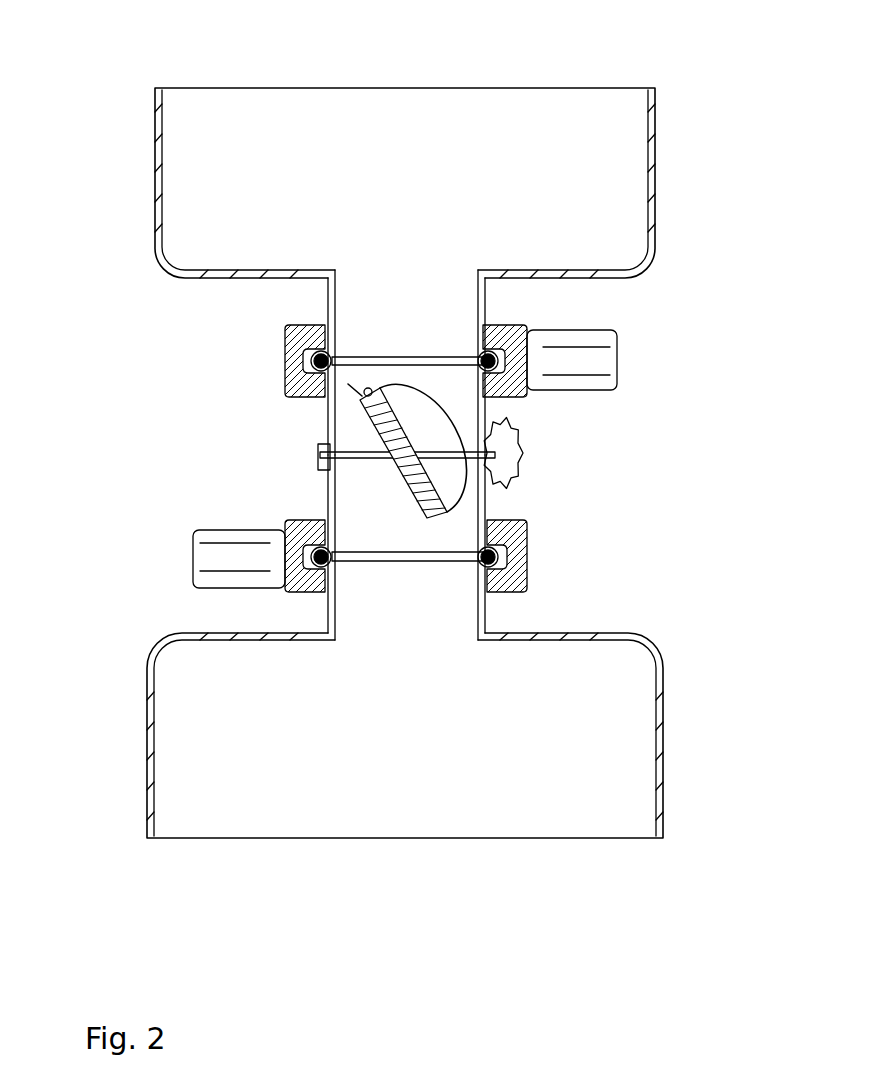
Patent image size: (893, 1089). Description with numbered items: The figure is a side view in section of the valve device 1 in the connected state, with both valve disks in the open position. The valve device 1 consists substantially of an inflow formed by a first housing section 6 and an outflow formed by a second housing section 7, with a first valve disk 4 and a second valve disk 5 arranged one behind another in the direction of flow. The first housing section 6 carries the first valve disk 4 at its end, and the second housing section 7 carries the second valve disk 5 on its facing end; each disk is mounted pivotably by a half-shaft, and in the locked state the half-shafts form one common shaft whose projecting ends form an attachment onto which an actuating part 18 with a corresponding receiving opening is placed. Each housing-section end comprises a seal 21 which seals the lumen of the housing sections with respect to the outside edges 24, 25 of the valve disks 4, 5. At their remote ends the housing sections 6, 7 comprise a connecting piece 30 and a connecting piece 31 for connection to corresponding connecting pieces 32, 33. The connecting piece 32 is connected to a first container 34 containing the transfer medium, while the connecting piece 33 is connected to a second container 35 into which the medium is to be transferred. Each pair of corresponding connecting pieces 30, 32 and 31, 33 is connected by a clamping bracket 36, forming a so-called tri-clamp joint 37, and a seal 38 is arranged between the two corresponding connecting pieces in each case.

The valve device 1 is at (193, 426).
The first valve disk 4 is at (428, 428).
The second valve disk 5 is at (418, 503).
The first housing section 6 is at (323, 423).
The second housing section 7 is at (330, 513).
The actuating part 18 is at (517, 448).
The seal 21 is at (318, 457).
The outside edge 24 is at (368, 388).
The outside edge 25 is at (362, 393).
The connecting piece 30 is at (293, 367).
The connecting piece 31 is at (523, 522).
The connecting piece 32 is at (318, 352).
The connecting piece 33 is at (528, 575).
The first container 34 is at (617, 152).
The second container 35 is at (618, 720).
The clamping bracket 36 is at (526, 330).
The tri-clamp joint 37 is at (258, 375).
The seal 38 is at (310, 356).